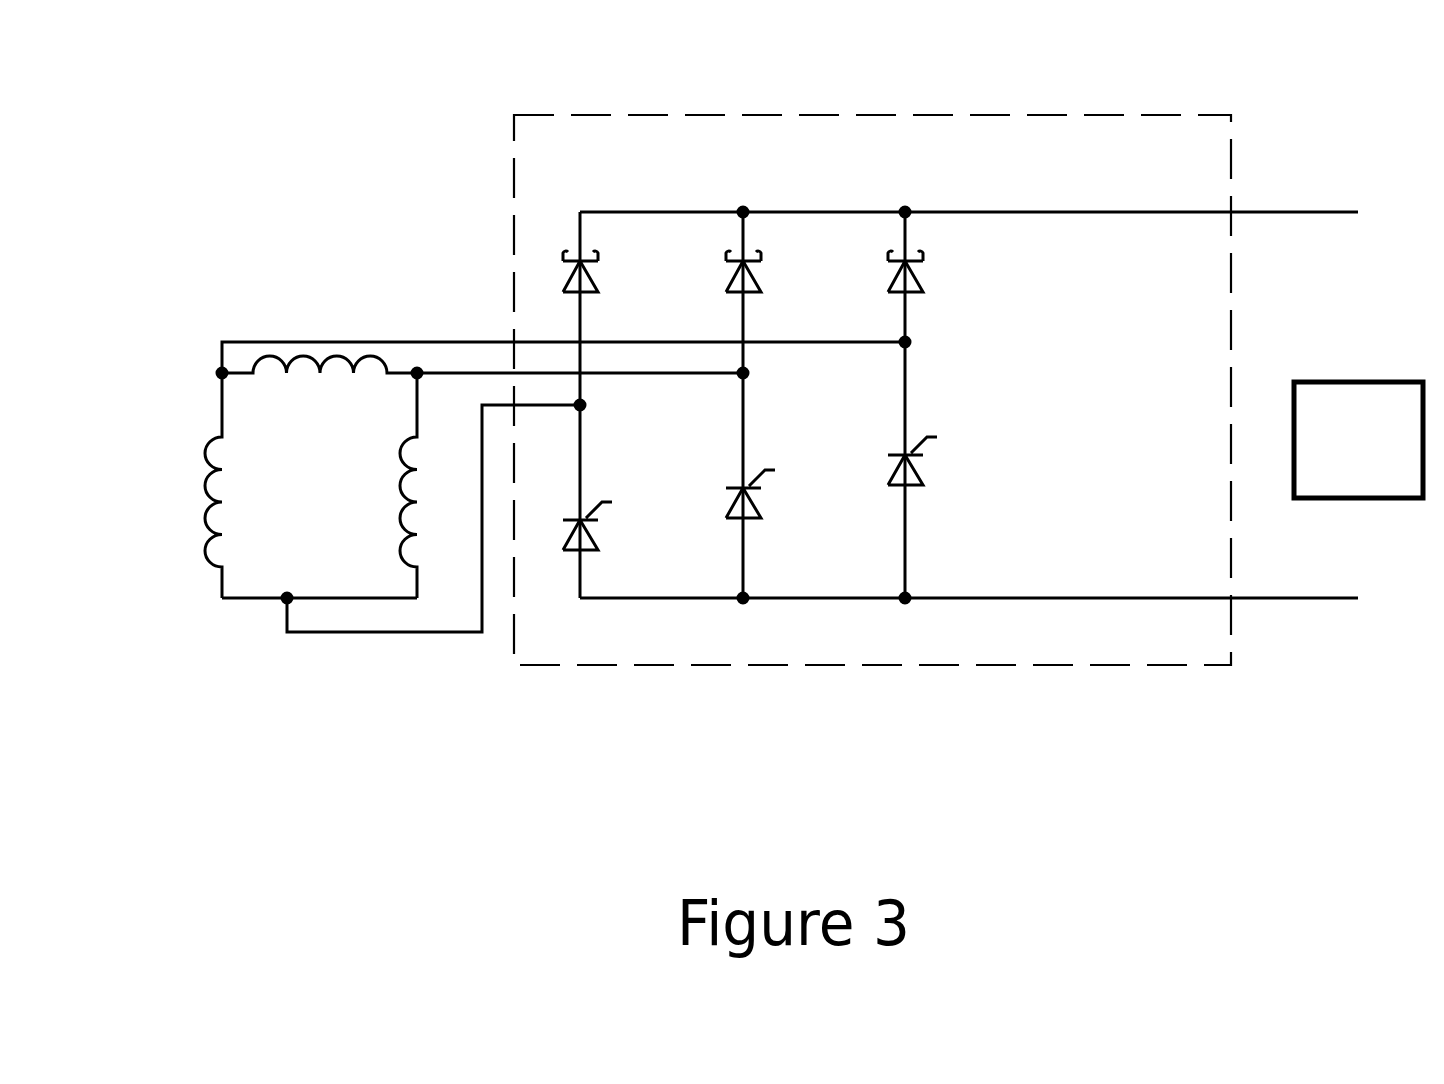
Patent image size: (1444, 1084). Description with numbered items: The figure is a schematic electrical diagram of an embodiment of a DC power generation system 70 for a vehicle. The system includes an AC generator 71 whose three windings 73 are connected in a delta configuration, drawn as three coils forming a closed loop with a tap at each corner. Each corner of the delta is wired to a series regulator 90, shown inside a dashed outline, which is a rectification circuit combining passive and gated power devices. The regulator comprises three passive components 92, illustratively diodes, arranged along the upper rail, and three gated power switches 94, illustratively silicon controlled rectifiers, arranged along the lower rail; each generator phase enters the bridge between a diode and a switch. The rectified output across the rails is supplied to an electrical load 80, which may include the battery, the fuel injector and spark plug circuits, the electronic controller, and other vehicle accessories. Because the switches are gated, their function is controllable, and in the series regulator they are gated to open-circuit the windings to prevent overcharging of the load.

The DC power generation system 70 is at (306, 156).
The AC generator 71 is at (340, 322).
The windings 73 is at (203, 450).
The electrical load 80 is at (1388, 382).
The series regulator 90 is at (508, 190).
The passive components 92 is at (921, 277).
The gated power switches 94 is at (920, 476).